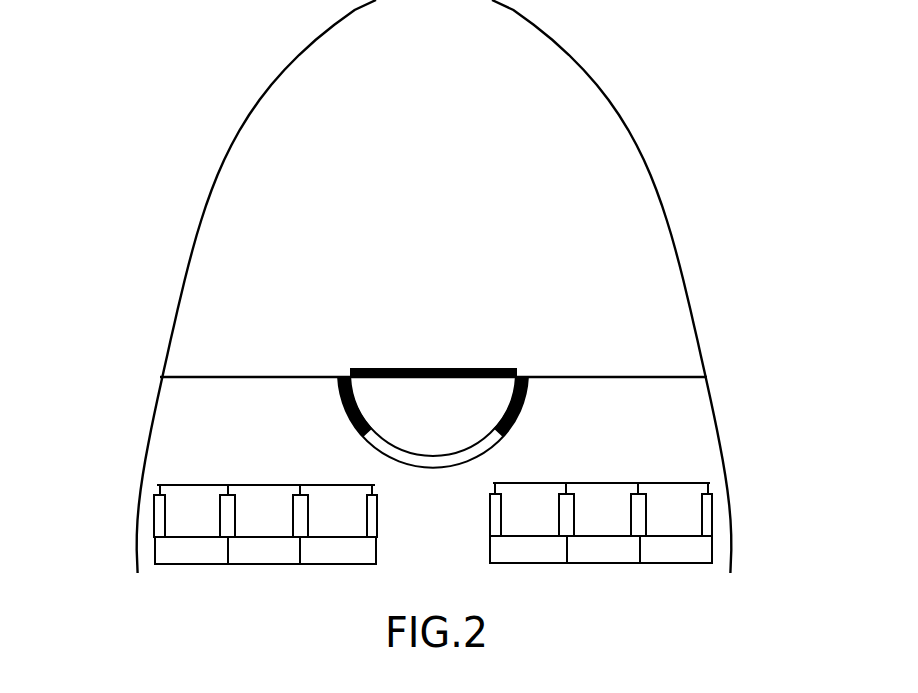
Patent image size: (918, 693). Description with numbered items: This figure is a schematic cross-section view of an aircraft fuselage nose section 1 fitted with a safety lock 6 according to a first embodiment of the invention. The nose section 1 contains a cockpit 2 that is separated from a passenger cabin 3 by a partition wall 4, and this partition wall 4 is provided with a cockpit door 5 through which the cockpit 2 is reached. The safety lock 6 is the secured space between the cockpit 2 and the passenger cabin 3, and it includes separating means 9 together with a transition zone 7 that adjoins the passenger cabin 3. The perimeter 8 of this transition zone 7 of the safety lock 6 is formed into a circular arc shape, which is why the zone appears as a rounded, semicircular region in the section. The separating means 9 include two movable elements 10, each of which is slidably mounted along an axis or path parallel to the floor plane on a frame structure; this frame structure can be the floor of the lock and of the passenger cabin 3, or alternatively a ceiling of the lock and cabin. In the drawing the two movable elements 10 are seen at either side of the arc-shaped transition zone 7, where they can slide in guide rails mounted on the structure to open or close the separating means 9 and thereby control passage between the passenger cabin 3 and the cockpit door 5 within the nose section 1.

The aircraft fuselage nose section 1 is at (148, 252).
The cockpit 2 is at (588, 160).
The passenger cabin 3 is at (688, 437).
The partition wall 4 is at (665, 375).
The cockpit door 5 is at (492, 368).
The safety lock 6 is at (565, 407).
The transition zone 7 is at (425, 415).
The perimeter 8 is at (458, 456).
The separating means 9 is at (323, 410).
The movable elements 10 is at (354, 426).